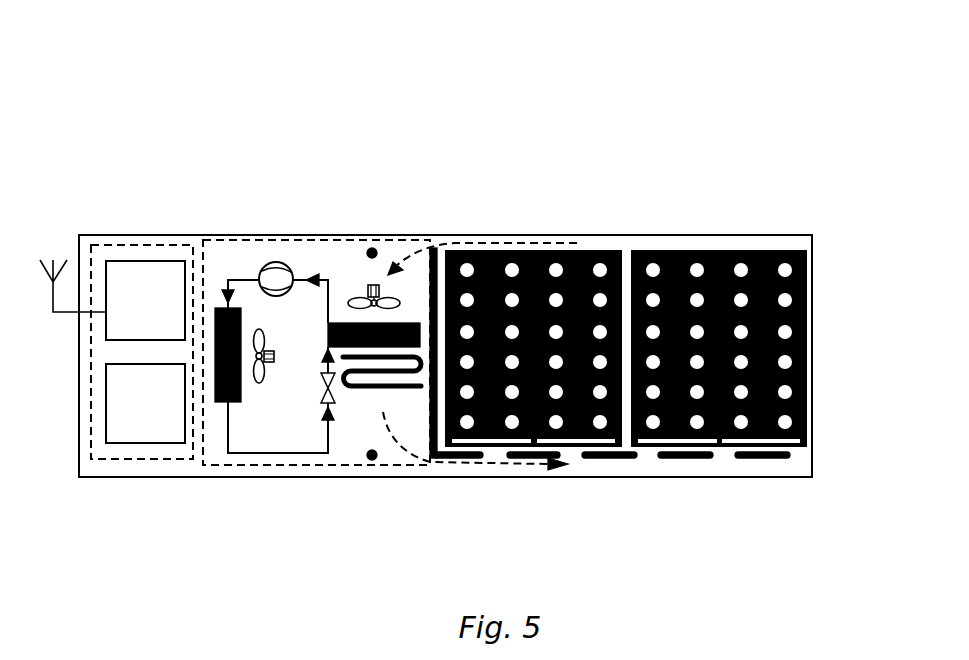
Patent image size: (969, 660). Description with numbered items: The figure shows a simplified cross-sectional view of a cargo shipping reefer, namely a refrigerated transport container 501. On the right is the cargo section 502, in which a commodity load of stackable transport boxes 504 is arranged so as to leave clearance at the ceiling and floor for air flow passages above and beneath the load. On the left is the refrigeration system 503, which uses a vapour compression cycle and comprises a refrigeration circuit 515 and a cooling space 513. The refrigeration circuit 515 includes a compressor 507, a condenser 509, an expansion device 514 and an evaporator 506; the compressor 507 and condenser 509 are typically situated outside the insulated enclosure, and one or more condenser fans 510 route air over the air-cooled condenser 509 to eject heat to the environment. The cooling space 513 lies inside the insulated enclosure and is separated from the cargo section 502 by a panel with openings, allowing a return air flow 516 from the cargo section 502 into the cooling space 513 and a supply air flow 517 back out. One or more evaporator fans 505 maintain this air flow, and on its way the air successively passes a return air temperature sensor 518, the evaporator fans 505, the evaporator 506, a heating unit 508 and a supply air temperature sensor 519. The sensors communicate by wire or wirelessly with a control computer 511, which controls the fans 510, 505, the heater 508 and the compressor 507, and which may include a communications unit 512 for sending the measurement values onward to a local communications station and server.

The refrigerated transport container 501 is at (708, 81).
The cargo section 502 is at (437, 140).
The refrigeration unit 503 is at (216, 138).
The stackable transport boxes 504 is at (663, 252).
The evaporator fans 505 is at (369, 290).
The evaporator 506 is at (372, 322).
The compressor 507 is at (264, 267).
The heating unit 508 is at (357, 393).
The condenser 509 is at (216, 362).
The condenser fans 510 is at (257, 352).
The control computer 511 is at (166, 415).
The communications unit 512 is at (166, 310).
The cooling space 513 is at (332, 183).
The expansion device 514 is at (322, 390).
The refrigeration circuit 515 is at (235, 465).
The return air flow 516 is at (445, 240).
The supply air flow 517 is at (510, 472).
The return air temperature sensor 518 is at (375, 249).
The supply air temperature sensor 519 is at (374, 459).